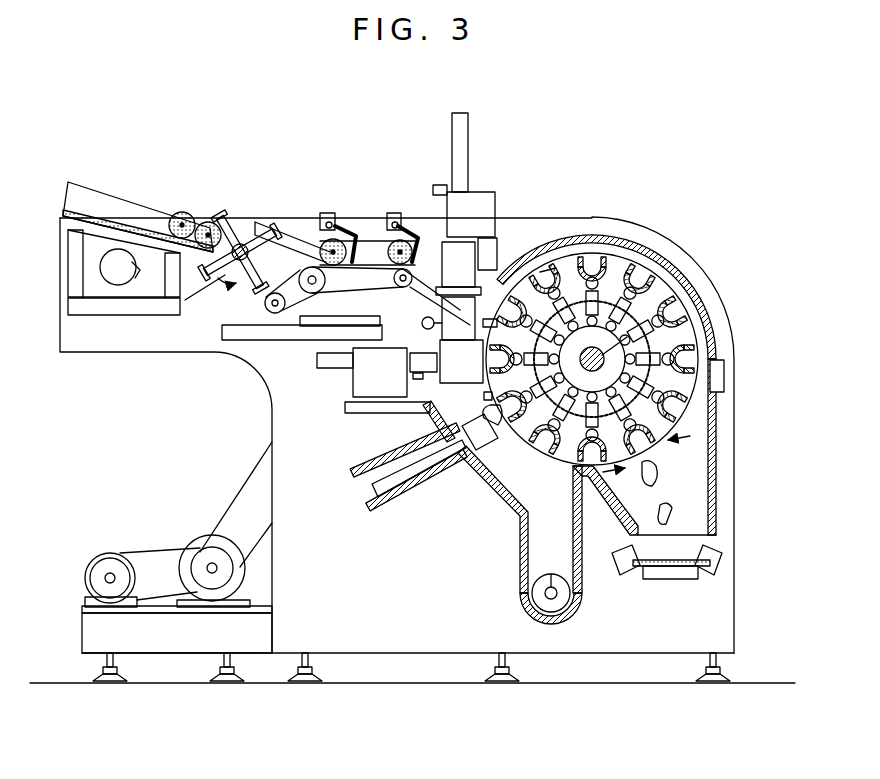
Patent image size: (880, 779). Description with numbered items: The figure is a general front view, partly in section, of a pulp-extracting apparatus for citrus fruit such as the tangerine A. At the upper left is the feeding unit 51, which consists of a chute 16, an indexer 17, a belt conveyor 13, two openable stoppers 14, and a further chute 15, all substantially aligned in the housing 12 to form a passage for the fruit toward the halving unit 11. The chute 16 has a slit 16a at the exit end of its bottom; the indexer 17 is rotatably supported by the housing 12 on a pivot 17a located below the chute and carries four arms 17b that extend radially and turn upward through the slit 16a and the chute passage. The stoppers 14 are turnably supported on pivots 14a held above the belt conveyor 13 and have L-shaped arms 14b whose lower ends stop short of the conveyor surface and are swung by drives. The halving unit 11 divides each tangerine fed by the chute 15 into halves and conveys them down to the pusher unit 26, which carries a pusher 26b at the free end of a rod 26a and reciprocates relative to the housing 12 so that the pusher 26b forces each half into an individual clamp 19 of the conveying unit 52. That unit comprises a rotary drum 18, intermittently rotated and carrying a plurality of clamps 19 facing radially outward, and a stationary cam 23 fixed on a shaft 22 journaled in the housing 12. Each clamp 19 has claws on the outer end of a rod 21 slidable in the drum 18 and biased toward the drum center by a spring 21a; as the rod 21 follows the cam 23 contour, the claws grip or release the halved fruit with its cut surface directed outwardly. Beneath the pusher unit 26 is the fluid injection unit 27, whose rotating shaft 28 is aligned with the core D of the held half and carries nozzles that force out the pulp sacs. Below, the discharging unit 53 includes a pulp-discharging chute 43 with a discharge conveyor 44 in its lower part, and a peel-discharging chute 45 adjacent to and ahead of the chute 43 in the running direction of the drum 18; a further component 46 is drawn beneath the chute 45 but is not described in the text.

The halving unit 11 is at (494, 192).
The housing 12 is at (268, 372).
The belt conveyor 13 is at (368, 250).
The openable stoppers 14 is at (330, 238).
The pivots 14a is at (322, 222).
The L-shaped arms 14b is at (350, 232).
The chute 15 is at (432, 285).
The chute 16 is at (98, 197).
The slit 16a is at (186, 300).
The indexer 17 is at (233, 240).
The pivot 17a is at (229, 293).
The arms 17b is at (222, 228).
The rotary drum 18 is at (725, 372).
The clamps 19 is at (692, 436).
The rod 21 is at (506, 277).
The spring 21a is at (548, 272).
The shaft 22 is at (700, 300).
The stationary cam 23 is at (586, 337).
The pusher unit 26 is at (335, 375).
The rod 26a is at (440, 350).
The pusher 26b is at (425, 364).
The fluid injection unit 27 is at (425, 487).
The rotating shaft 28 is at (493, 433).
The pulp-discharging chute 43 is at (520, 565).
The discharge conveyor 44 is at (540, 598).
The peel-discharging chute 45 is at (716, 505).
The receiving tray 46 is at (668, 579).
The feeding unit 51 is at (212, 148).
The conveying unit 52 is at (655, 215).
The discharging unit 53 is at (598, 628).
The tangerine A is at (178, 215).
The core D is at (292, 230).